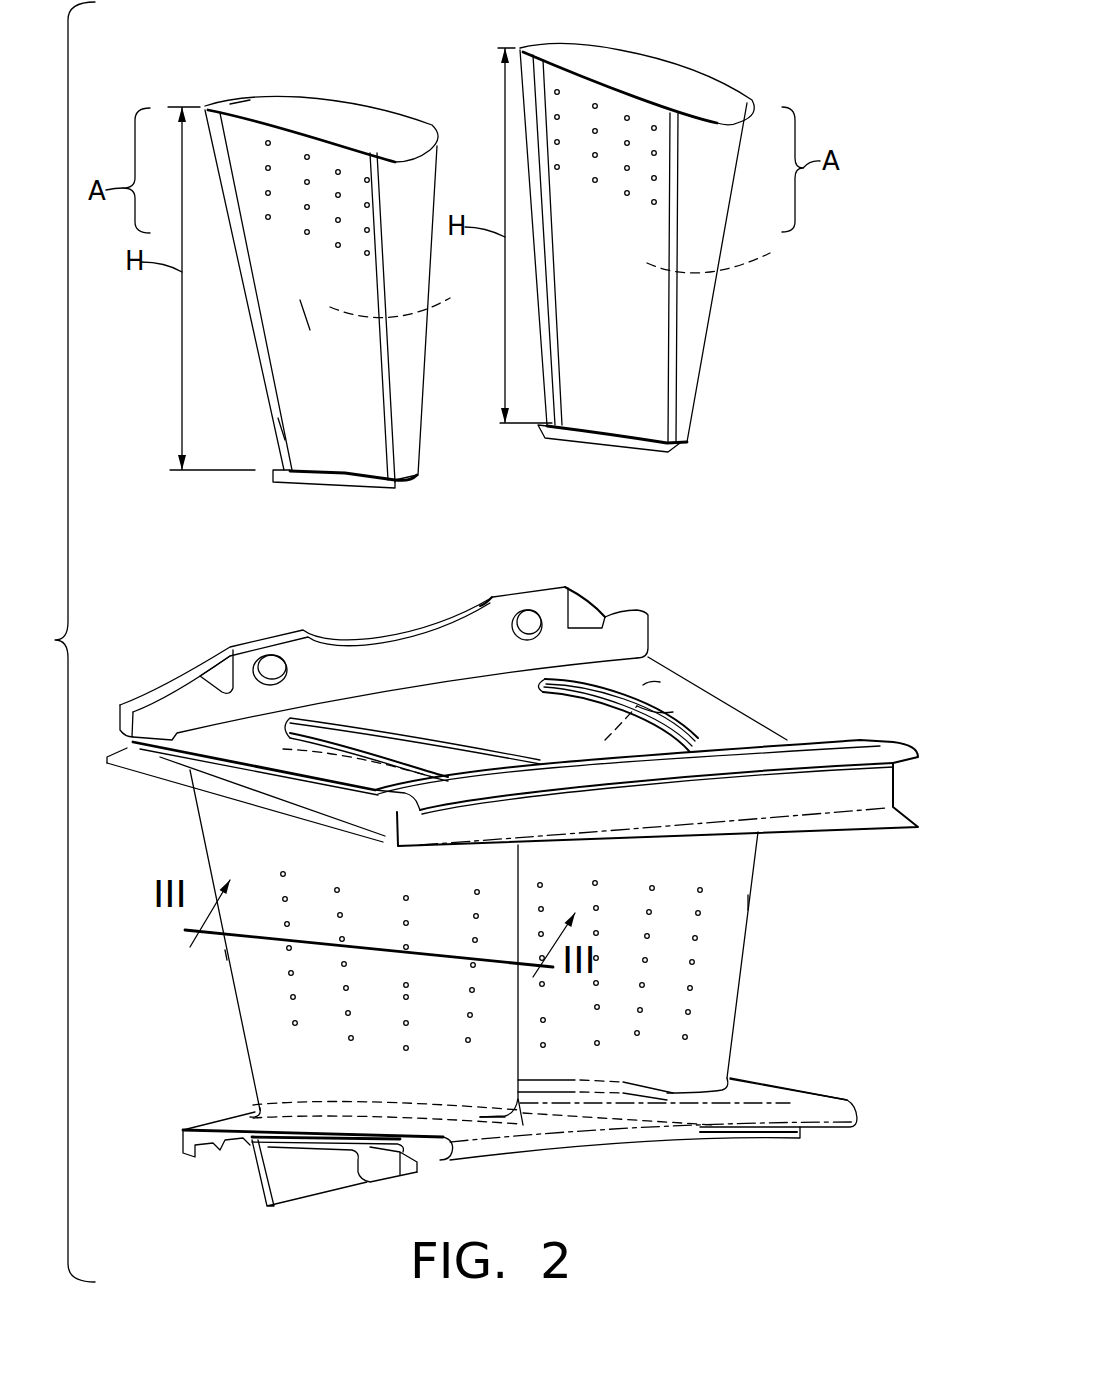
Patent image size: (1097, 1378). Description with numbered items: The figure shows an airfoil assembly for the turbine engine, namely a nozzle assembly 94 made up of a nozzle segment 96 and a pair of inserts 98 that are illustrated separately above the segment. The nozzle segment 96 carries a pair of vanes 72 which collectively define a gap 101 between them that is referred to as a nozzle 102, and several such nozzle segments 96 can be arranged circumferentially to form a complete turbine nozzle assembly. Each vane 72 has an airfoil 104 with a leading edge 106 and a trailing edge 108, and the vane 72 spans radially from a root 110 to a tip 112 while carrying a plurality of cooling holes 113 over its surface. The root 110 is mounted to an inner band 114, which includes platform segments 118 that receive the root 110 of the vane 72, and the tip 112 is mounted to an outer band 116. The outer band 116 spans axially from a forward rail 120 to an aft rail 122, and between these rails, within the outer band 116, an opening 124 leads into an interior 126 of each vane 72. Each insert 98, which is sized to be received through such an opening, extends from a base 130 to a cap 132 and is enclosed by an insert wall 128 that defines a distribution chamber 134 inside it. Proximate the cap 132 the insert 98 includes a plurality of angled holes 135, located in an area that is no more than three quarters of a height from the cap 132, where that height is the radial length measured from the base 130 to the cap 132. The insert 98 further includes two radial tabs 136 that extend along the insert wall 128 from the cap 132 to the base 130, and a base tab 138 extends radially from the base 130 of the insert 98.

The vane 72 is at (387, 987).
The nozzle assembly 94 is at (55, 627).
The nozzle segment 96 is at (753, 600).
The insert 98 is at (293, 100).
The gap 101 is at (540, 1107).
The nozzle 102 is at (663, 1030).
The airfoil 104 is at (370, 728).
The leading edge 106 is at (748, 902).
The trailing edge 108 is at (227, 953).
The root 110 is at (677, 1097).
The tip 112 is at (437, 742).
The cooling holes 113 is at (293, 997).
The inner band 114 is at (793, 1112).
The outer band 116 is at (653, 670).
The platform segments 118 is at (243, 1145).
The forward rail 120 is at (847, 747).
The aft rail 122 is at (507, 608).
The opening 124 is at (727, 727).
The interior 126 is at (647, 717).
The insert wall 128 is at (352, 335).
The base 130 is at (413, 483).
The cap 132 is at (383, 130).
The distribution chamber 134 is at (577, 278).
The angled holes 135 is at (367, 205).
The radial tab 136 is at (385, 395).
The base tab 138 is at (337, 488).